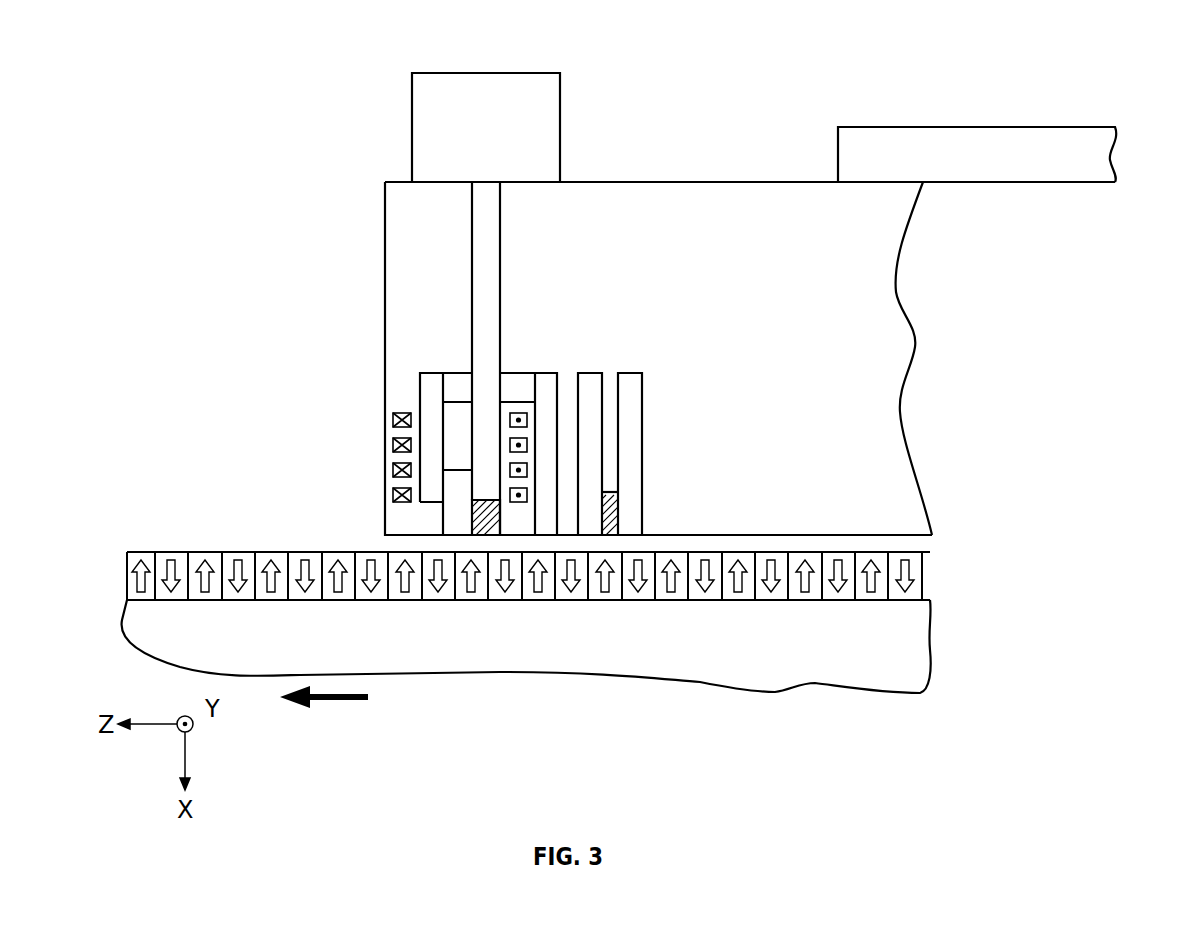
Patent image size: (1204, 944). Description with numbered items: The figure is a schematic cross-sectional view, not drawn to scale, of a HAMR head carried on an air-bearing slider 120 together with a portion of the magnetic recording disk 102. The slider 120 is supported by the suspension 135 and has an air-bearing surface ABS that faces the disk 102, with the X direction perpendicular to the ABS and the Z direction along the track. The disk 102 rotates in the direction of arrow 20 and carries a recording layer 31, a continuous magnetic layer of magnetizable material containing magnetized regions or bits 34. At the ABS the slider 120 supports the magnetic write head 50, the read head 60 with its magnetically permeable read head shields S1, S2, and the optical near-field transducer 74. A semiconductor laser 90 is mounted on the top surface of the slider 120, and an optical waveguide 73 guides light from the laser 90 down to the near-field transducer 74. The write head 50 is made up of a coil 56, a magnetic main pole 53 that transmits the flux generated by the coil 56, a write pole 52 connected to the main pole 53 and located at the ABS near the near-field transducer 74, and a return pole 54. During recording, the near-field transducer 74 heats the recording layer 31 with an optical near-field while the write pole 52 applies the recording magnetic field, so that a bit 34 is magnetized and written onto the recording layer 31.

The arrow 20 is at (318, 700).
The recording layer 31 is at (114, 551).
The bits 34 is at (238, 552).
The magnetic write head 50 is at (556, 318).
The write pole 52 is at (456, 470).
The magnetic main pole 53 is at (432, 373).
The return pole 54 is at (554, 386).
The coil 56 is at (378, 408).
The read head 60 is at (622, 520).
The optical waveguide 73 is at (486, 321).
The optical near-field transducer 74 is at (485, 498).
The semiconductor laser 90 is at (426, 126).
The magnetic recording disk 102 is at (920, 693).
The air-bearing slider 120 is at (900, 432).
The suspension 135 is at (1030, 127).
The read head shield S1 is at (630, 453).
The read head shield S2 is at (590, 373).
The air-bearing surface ABS is at (402, 536).